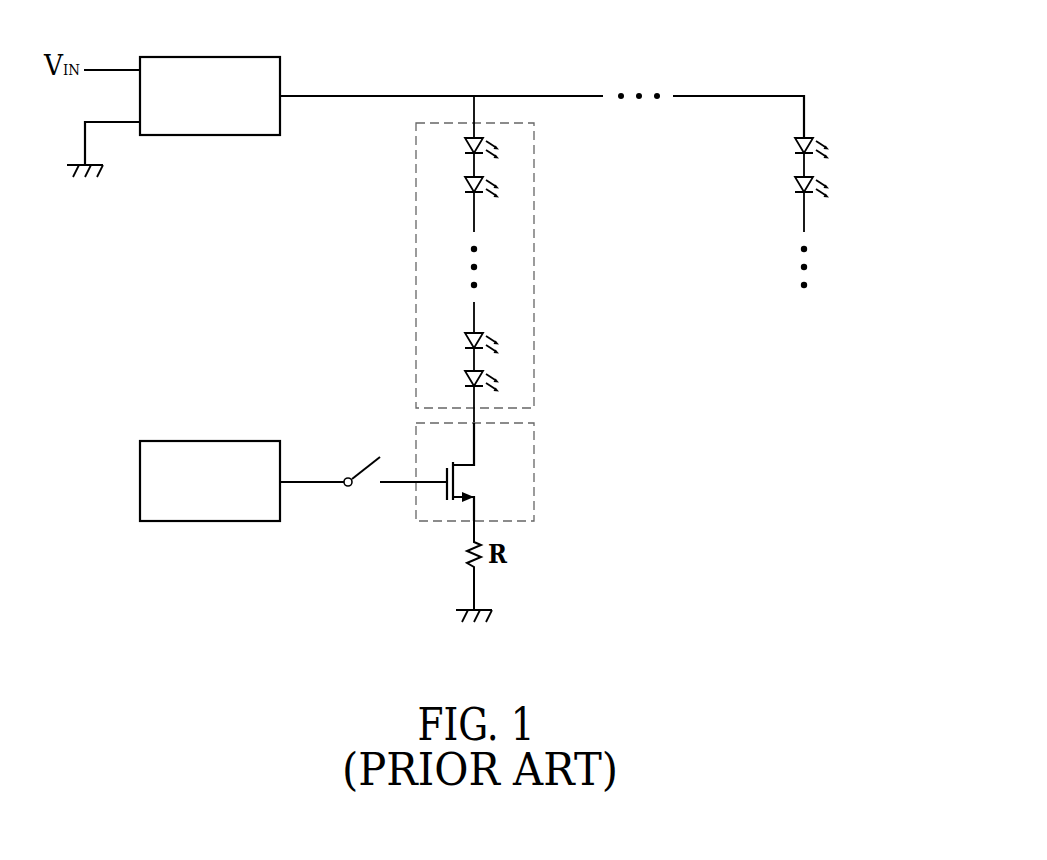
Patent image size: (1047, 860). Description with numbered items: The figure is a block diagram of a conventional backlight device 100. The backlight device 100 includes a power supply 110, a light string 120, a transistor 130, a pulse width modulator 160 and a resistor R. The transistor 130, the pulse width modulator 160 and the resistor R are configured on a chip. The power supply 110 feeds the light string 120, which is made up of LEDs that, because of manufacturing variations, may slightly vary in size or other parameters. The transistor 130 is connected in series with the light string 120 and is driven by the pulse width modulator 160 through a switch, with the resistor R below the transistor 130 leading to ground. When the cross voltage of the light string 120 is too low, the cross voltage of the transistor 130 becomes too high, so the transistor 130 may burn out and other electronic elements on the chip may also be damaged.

The backlight device 100 is at (992, 79).
The power supply 110 is at (208, 57).
The light string 120 is at (534, 265).
The transistor 130 is at (534, 475).
The pulse width modulator 160 is at (208, 441).